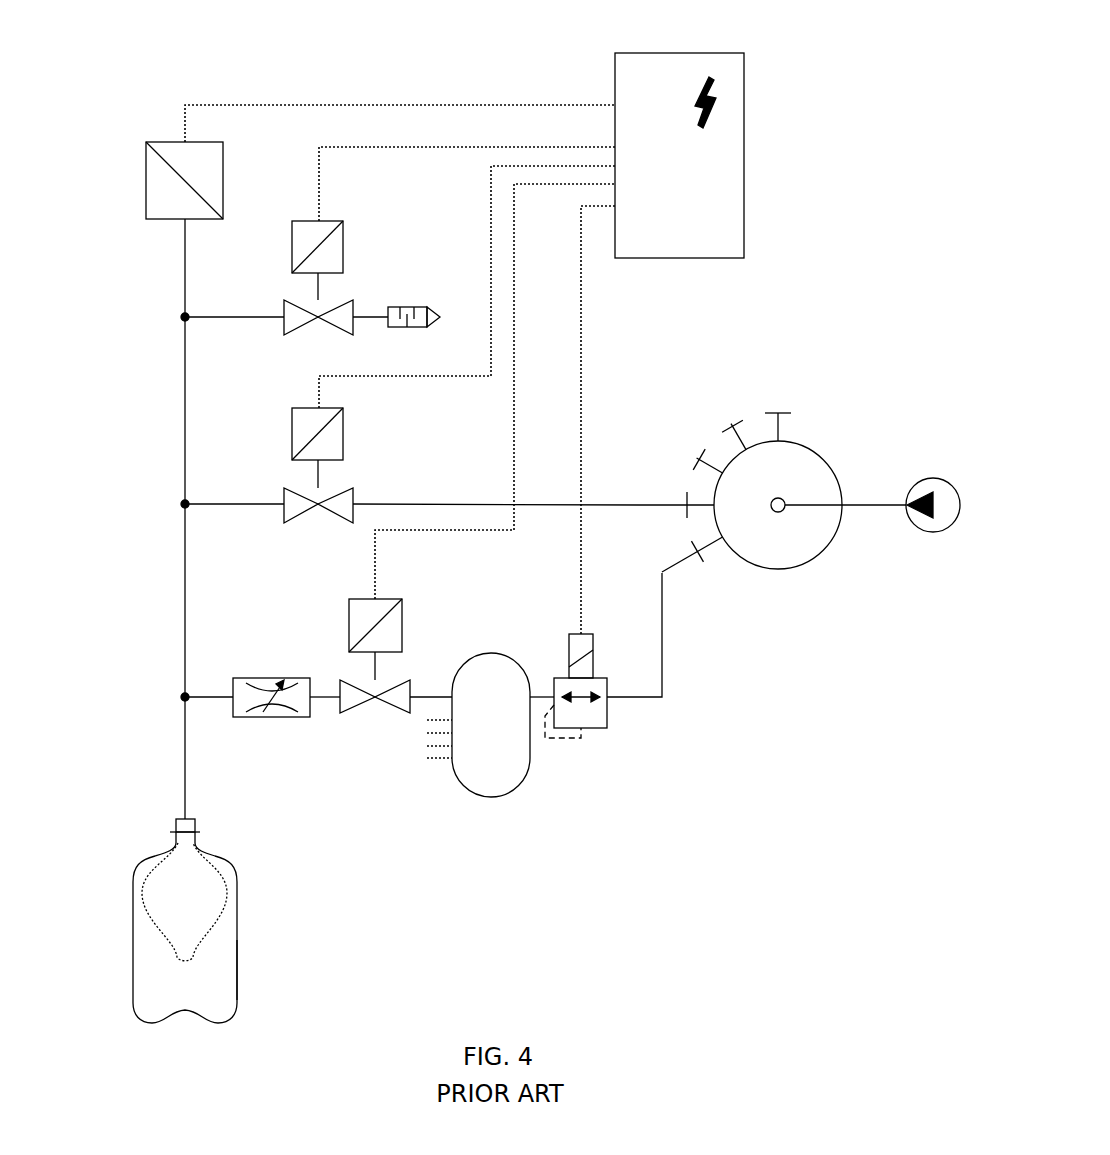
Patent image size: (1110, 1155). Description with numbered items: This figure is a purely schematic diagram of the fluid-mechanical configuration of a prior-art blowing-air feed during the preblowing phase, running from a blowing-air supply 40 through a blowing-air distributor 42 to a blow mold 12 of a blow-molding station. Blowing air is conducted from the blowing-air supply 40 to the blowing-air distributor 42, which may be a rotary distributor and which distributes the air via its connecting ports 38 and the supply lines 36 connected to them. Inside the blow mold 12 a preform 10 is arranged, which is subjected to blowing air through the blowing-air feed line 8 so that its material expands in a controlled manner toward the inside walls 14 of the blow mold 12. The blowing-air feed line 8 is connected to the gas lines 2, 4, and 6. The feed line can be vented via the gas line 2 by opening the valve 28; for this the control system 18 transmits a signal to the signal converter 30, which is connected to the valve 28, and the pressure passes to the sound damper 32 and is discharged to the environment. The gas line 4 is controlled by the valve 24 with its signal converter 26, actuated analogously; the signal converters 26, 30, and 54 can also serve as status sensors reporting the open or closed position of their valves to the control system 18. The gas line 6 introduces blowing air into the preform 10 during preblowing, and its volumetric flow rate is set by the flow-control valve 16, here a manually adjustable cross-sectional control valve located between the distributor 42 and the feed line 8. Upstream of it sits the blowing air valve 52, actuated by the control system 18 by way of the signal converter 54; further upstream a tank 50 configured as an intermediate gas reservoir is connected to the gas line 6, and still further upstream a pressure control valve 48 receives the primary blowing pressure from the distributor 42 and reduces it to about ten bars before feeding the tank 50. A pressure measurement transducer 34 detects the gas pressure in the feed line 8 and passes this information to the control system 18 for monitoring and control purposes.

The gas line 2 is at (200, 320).
The gas line 4 is at (217, 507).
The gas line 6 is at (217, 703).
The blowing-air feed line 8 is at (185, 712).
The preform 10 is at (165, 917).
The blow mold 12 is at (268, 914).
The inside walls 14 is at (237, 963).
The flow-control valve 16 is at (242, 690).
The control system 18 is at (735, 233).
The valve 24 is at (287, 502).
The signal converter 26 is at (300, 432).
The valve 28 is at (283, 310).
The signal converter 30 is at (293, 260).
The sound damper 32 is at (403, 307).
The pressure measurement transducer 34 is at (153, 182).
The supply lines 36 is at (660, 497).
The connecting ports 38 is at (780, 430).
The blowing-air supply 40 is at (930, 532).
The blowing-air distributor 42 is at (793, 560).
The pressure control valve 48 is at (592, 722).
The tank 50 is at (486, 782).
The blowing air valve 52 is at (348, 703).
The signal converter 54 is at (355, 623).